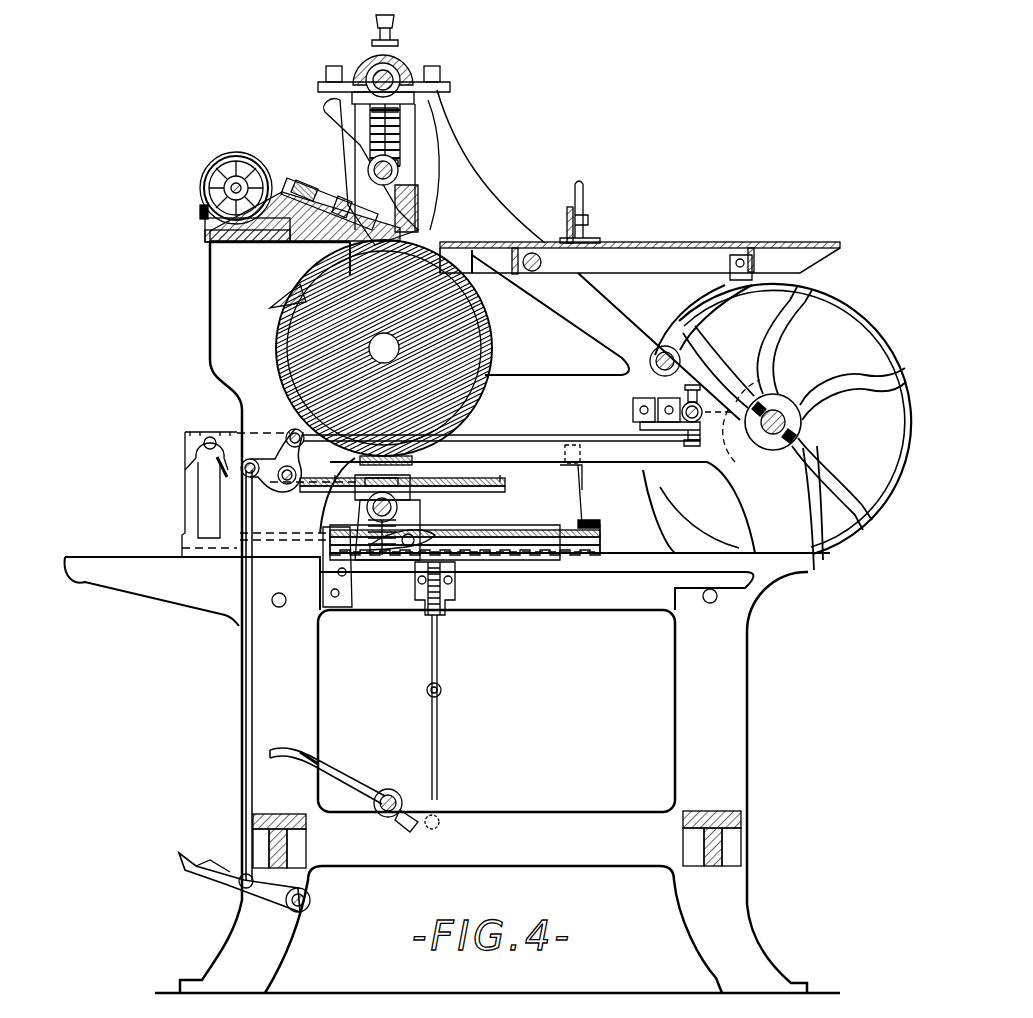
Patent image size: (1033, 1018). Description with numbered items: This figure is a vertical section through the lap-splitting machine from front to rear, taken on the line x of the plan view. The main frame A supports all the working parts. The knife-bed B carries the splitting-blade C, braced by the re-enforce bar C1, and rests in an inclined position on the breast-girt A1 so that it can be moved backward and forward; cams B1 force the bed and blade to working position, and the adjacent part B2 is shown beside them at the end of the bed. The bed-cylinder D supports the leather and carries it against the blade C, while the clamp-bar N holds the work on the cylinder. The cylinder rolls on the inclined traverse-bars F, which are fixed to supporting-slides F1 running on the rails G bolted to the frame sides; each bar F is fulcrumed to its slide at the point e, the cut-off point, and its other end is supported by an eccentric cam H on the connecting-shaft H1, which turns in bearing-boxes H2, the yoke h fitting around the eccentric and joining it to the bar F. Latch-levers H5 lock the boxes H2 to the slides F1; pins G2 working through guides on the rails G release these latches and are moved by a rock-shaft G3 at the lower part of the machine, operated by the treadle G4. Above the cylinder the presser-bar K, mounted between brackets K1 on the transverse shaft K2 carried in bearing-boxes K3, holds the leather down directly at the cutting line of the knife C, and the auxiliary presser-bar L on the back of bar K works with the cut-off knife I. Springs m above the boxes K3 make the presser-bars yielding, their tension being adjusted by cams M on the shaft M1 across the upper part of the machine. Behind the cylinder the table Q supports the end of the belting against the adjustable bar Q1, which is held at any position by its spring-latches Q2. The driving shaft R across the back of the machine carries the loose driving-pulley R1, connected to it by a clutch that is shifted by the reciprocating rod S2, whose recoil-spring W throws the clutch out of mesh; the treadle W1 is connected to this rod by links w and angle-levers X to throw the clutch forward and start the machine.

The main frame A is at (452, 541).
The breast-girt A1 is at (234, 231).
The knife-bed B is at (345, 235).
The cams B1 is at (238, 170).
The pulley rim B2 is at (212, 168).
The splitting-blade C is at (290, 178).
The re-enforce bar C1 is at (310, 185).
The bed-cylinder D is at (384, 348).
The clamp-bar N is at (279, 297).
The cut-off knife I is at (398, 467).
The cams M is at (368, 68).
The shaft M1 is at (400, 64).
The springs m is at (410, 118).
The presser-bar K is at (400, 178).
The brackets K1 is at (405, 165).
The transverse shaft K2 is at (405, 148).
The bearing-boxes K3 is at (395, 130).
The auxiliary presser-bar L is at (420, 205).
The table Q is at (640, 296).
The adjustable bar Q1 is at (571, 222).
The spring-latches Q2 is at (583, 212).
The driving shaft R is at (790, 418).
The driving-pulley R1 is at (785, 424).
The reciprocating rod S2 is at (684, 412).
The section line x x is at (686, 448).
The angle-levers X is at (272, 460).
The links w is at (501, 428).
The fulcrum point e is at (210, 437).
The recoil-spring W is at (260, 655).
The treadle W1 is at (244, 868).
The eccentric cams H is at (398, 492).
The yoke h is at (380, 488).
The connecting-shaft H1 is at (405, 510).
The bearing-boxes H2 is at (395, 530).
The latch-levers H5 is at (425, 535).
The traverse-bars F is at (498, 478).
The supporting-slides F1 is at (465, 500).
The rails G is at (475, 557).
The pins G2 is at (441, 681).
The rock-shaft G3 is at (381, 679).
The treadle G4 is at (327, 763).